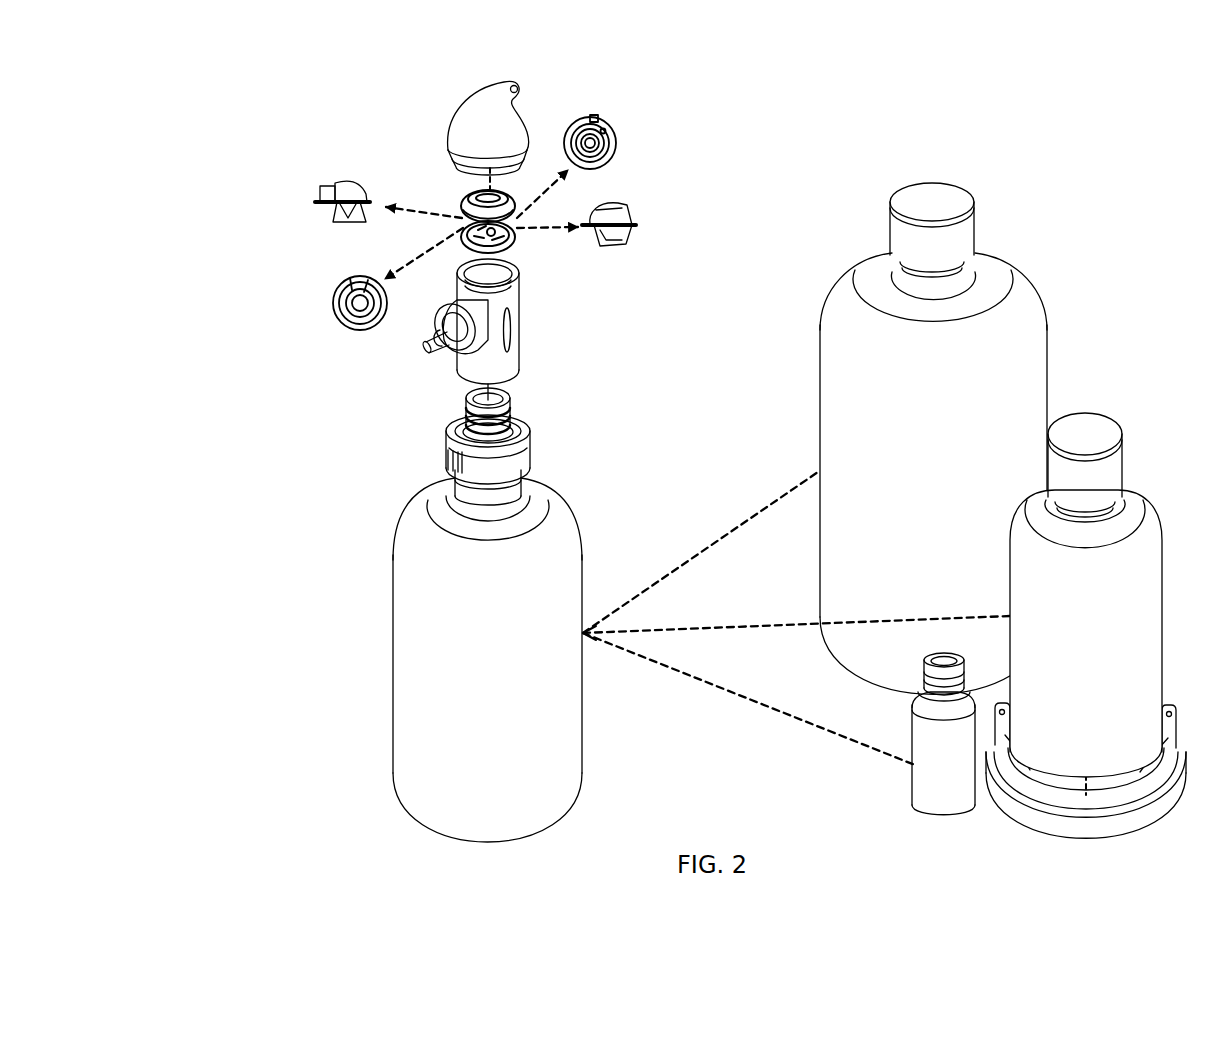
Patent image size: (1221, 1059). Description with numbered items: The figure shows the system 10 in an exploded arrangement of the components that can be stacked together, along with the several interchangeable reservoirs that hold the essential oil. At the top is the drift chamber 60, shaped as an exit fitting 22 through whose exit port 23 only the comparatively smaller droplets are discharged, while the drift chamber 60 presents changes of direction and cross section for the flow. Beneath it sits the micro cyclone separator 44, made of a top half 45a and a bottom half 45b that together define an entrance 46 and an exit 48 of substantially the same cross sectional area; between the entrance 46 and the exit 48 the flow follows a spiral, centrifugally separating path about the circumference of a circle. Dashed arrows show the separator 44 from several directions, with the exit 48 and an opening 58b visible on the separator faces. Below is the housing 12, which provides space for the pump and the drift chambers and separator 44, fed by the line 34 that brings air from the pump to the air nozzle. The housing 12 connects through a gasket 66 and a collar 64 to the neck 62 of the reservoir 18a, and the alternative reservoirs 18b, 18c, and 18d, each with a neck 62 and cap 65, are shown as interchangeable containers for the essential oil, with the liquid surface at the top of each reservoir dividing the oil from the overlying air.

The system 10 is at (280, 835).
The housing 12 is at (522, 300).
The reservoir 18a is at (487, 660).
The reservoir 18b is at (933, 473).
The reservoir 18c is at (1086, 633).
The reservoir 18d is at (943, 753).
The exit fitting 22 is at (469, 95).
The exit port 23 is at (518, 87).
The line 34 is at (428, 352).
The micro cyclone separator 44 is at (470, 200).
The top half 45a is at (512, 200).
The bottom half 45b is at (514, 240).
The entrance 46 is at (360, 290).
The exit 48 is at (596, 119).
The seal opening 58b is at (600, 143).
The drift chamber 60 is at (488, 128).
The container neck 62 is at (522, 472).
The collar 64 is at (536, 447).
The container cap 65 is at (940, 190).
The gasket 66 is at (513, 405).